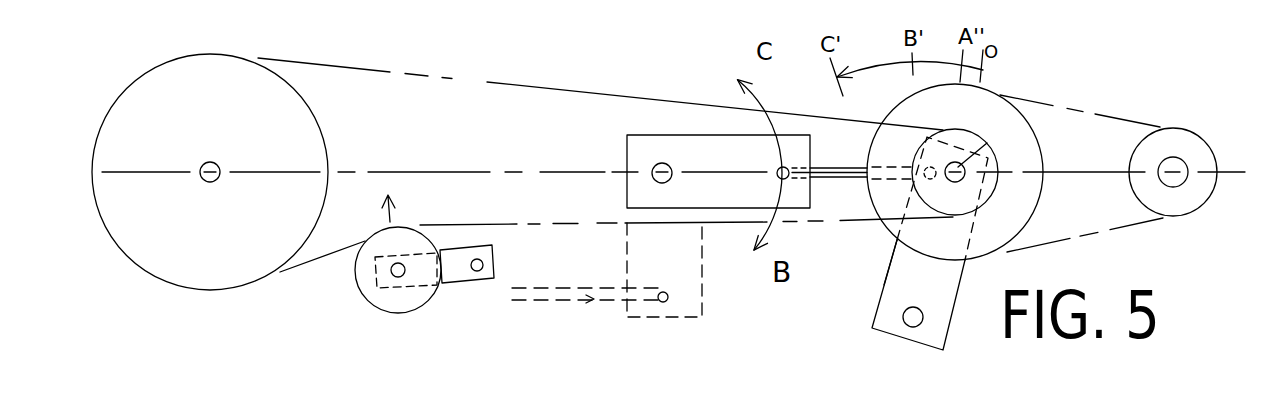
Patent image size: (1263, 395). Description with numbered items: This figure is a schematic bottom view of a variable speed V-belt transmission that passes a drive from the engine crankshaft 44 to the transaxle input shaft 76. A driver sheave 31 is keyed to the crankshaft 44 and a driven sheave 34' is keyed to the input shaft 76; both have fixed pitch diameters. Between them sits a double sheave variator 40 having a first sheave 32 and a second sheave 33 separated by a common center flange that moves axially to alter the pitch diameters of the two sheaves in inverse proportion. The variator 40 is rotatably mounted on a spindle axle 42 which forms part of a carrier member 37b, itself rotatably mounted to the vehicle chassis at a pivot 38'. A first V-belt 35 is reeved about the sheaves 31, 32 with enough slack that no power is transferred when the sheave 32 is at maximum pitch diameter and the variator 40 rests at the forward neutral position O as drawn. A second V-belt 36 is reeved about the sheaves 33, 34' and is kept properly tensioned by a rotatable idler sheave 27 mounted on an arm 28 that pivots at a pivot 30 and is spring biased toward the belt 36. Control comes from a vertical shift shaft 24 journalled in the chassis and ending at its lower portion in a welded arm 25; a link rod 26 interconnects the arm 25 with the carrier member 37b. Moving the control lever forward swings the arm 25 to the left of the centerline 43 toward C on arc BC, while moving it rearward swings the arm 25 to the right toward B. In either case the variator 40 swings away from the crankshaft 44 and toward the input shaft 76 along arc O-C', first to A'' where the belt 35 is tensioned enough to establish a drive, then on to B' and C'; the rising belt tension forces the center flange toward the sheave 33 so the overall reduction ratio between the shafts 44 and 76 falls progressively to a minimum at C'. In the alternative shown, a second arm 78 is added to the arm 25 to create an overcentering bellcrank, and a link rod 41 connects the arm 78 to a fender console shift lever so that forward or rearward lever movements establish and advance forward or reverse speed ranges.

The vertical shift shaft 24 is at (656, 165).
The arm 25 is at (748, 160).
The link rod 26 is at (840, 167).
The idler sheave 27 is at (417, 305).
The arm 28 is at (462, 275).
The pivot 30 is at (492, 253).
The driver sheave 31 is at (1190, 207).
The first sheave 32 is at (1040, 213).
The second sheave 33 is at (996, 186).
The driven sheave 34' is at (285, 280).
The first V-belt 35 is at (1110, 102).
The second V-belt 36 is at (517, 93).
The carrier member 37b is at (897, 270).
The pivot 38' is at (890, 334).
The double sheave variator 40 is at (913, 240).
The link rod 41 is at (583, 305).
The spindle axle 42 is at (997, 153).
The centerline 43 is at (477, 177).
The crankshaft 44 is at (1175, 168).
The input shaft 76 is at (210, 182).
The second arm 78 is at (700, 285).